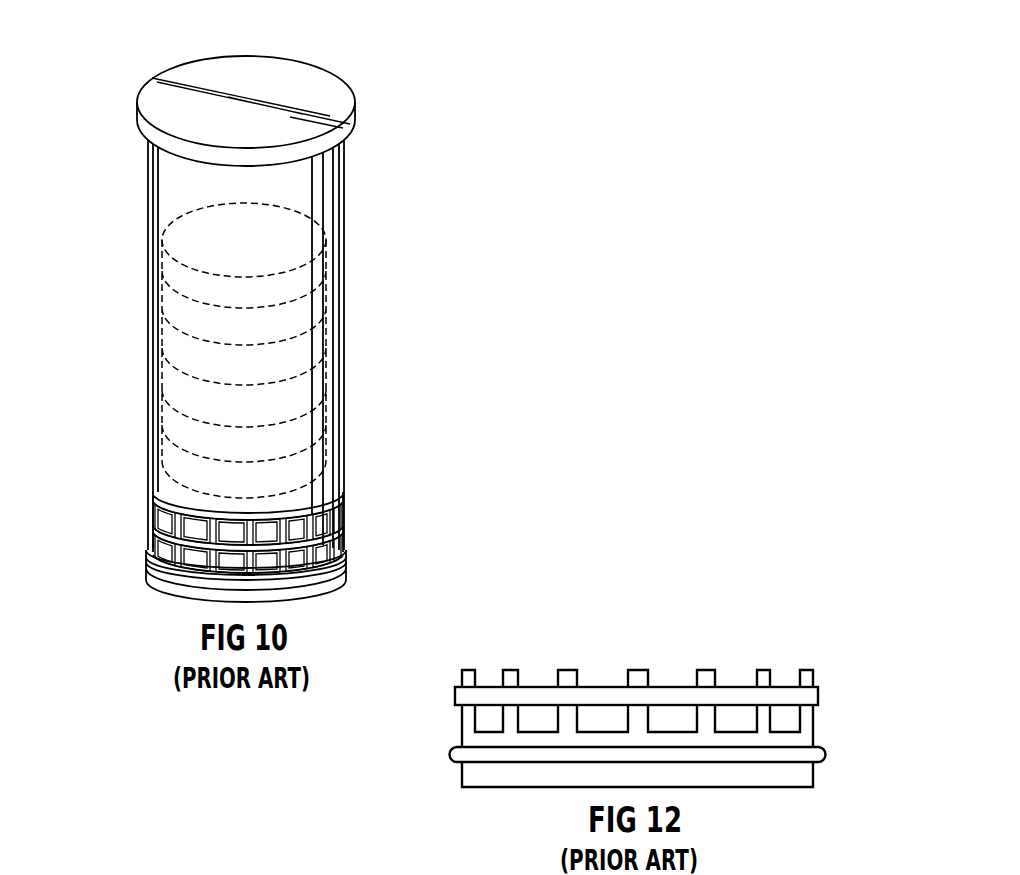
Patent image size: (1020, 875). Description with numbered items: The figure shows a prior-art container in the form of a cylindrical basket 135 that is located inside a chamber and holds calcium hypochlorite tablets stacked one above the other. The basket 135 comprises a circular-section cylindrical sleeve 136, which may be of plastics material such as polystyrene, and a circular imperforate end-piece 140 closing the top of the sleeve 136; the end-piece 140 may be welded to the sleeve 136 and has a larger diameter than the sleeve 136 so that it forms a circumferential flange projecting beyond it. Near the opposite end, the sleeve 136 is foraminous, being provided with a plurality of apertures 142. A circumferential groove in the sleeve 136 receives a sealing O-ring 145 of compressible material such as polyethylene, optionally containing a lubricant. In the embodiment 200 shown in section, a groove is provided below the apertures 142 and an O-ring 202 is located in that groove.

In FIG. 10, the basket 135 is at (368, 347).
In FIG. 10, the cylindrical sleeve 136 is at (303, 183).
In FIG. 12, the cylindrical sleeve 136 is at (462, 718).
In FIG. 10, the end-piece 140 is at (250, 73).
In FIG. 10, the apertures 142 is at (272, 525).
In FIG. 12, the apertures 142 is at (675, 722).
In FIG. 10, the sealing O-ring 145 is at (142, 549).
In FIG. 12, the embodiment 200 is at (736, 616).
In FIG. 12, the O-ring 202 is at (455, 752).